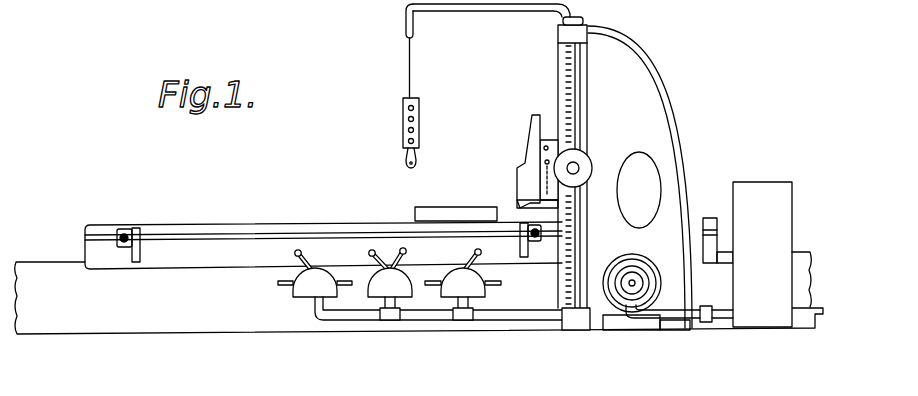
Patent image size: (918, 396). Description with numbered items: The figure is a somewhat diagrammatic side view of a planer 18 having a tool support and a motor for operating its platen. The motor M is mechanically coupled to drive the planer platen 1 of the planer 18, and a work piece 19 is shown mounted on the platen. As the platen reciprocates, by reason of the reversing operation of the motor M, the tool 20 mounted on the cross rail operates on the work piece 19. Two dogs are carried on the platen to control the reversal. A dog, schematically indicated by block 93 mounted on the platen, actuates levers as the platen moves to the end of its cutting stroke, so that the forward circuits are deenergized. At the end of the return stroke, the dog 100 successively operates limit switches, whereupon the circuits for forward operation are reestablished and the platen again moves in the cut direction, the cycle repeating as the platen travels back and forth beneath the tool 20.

The planer platen 1 is at (215, 223).
The planer 18 is at (180, 313).
The work piece 19 is at (410, 206).
The tool 20 is at (520, 206).
The dog 93 is at (142, 257).
The dog 100 is at (520, 250).
The motor M is at (646, 268).